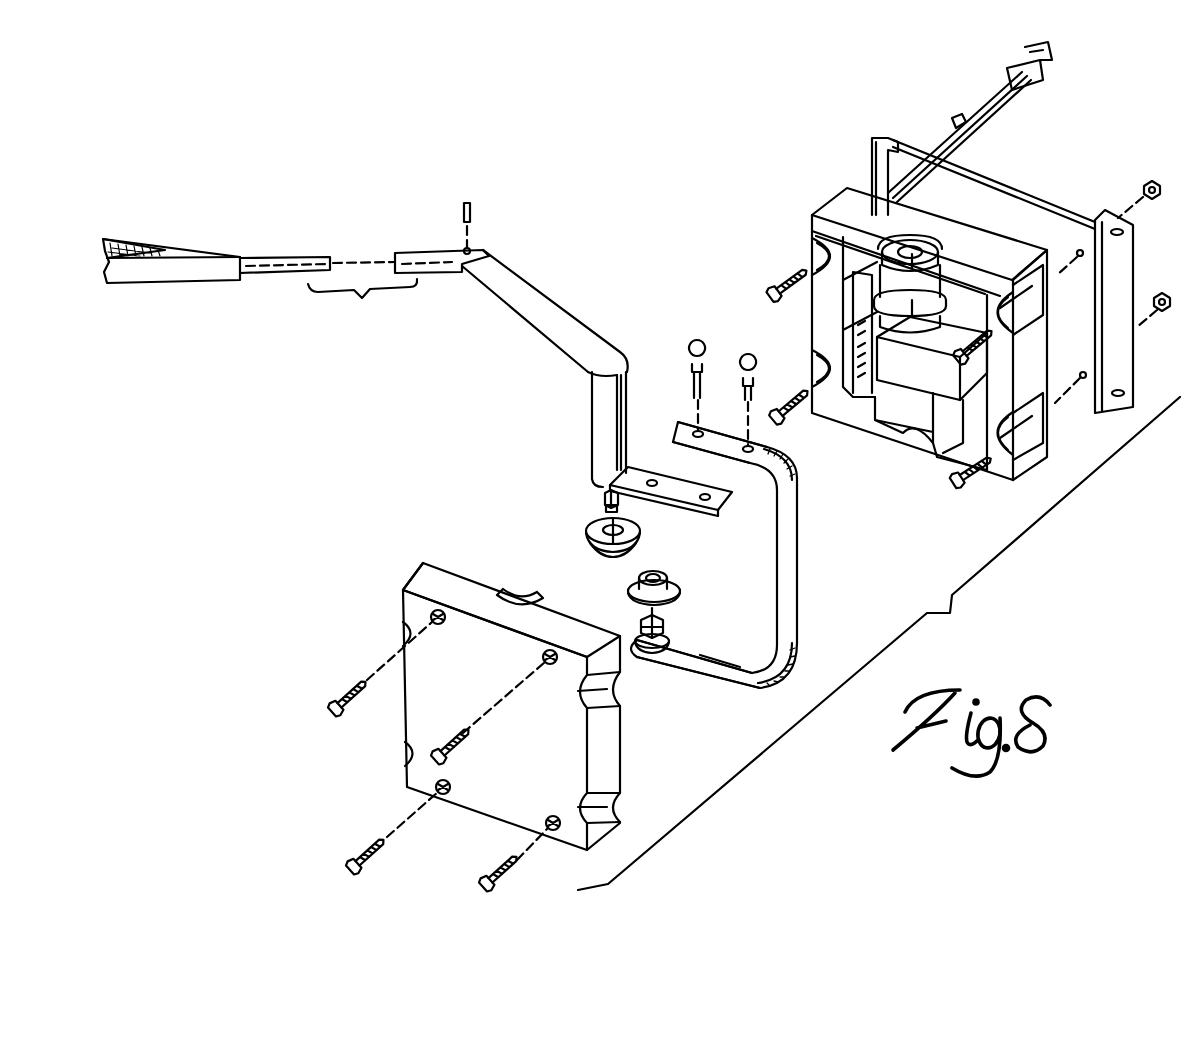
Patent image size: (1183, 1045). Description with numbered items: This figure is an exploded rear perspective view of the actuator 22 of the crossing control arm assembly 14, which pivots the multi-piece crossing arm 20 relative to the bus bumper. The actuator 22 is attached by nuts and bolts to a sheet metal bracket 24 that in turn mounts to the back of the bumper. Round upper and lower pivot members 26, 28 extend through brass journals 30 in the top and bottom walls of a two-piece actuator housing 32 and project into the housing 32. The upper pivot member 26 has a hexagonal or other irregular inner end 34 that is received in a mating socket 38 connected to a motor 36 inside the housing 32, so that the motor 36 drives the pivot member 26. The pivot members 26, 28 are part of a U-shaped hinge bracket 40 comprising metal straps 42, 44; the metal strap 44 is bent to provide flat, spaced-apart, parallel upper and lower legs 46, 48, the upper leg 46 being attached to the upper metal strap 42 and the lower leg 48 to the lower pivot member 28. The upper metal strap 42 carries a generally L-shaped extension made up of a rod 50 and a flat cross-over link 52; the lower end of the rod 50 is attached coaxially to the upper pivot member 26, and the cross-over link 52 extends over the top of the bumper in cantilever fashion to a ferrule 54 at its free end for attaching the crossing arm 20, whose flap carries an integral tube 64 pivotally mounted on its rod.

The crossing control arm assembly 14 is at (133, 238).
The multi-piece crossing arm 20 is at (290, 252).
The actuator 22 is at (440, 522).
The sheet metal bracket 24 is at (1025, 215).
The upper pivot member 26 is at (603, 496).
The lower pivot member 28 is at (648, 652).
The brass journals 30 is at (640, 535).
The two-piece actuator housing 32 is at (612, 765).
The irregular inner end 34 is at (603, 506).
The motor 36 is at (933, 437).
The mating socket 38 is at (887, 262).
The U-shaped hinge bracket 40 is at (759, 529).
The upper metal strap 42 is at (665, 477).
The metal strap 44 is at (737, 660).
The upper leg 46 is at (713, 432).
The lower leg 48 is at (710, 645).
The rod 50 is at (598, 420).
The cross-over link 52 is at (553, 308).
The ferrule 54 is at (414, 257).
The integral tube 64 is at (160, 272).